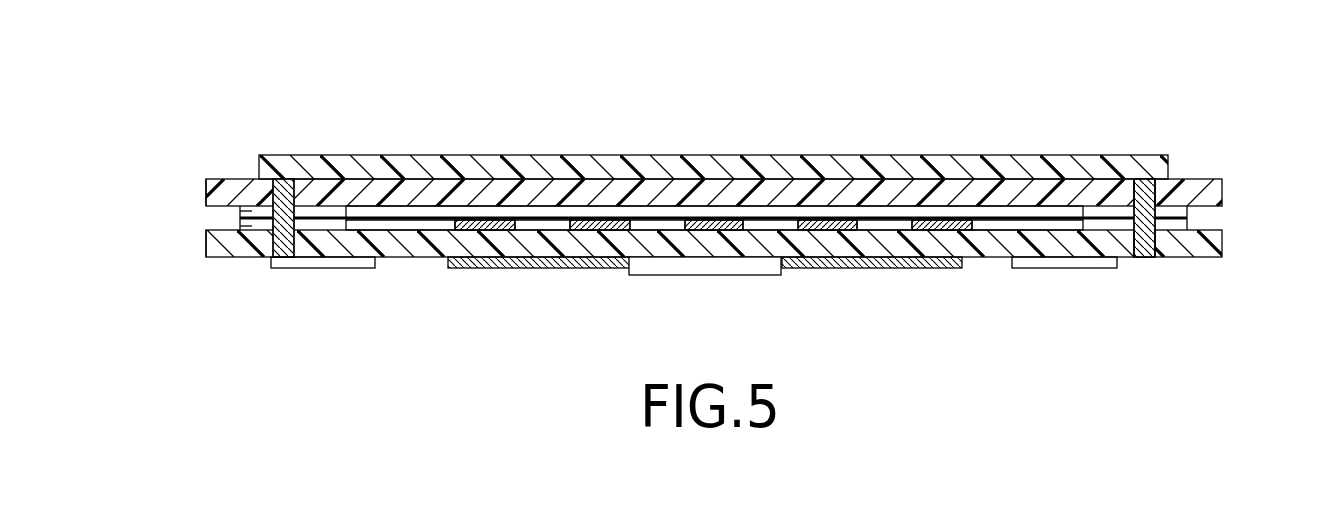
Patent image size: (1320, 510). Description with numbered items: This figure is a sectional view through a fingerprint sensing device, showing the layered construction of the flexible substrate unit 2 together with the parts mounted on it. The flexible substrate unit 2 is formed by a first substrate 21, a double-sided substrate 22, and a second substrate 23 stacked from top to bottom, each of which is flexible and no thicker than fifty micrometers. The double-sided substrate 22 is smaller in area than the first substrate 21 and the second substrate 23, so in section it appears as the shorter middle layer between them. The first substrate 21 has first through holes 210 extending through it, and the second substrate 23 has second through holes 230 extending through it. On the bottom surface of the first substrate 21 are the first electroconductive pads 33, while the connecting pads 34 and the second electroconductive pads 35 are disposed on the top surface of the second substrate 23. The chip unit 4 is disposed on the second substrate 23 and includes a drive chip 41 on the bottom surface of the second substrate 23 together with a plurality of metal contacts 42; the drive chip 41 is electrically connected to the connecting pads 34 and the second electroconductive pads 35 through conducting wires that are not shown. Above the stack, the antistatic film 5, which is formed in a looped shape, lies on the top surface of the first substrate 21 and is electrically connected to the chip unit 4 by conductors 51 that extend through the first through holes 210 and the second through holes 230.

The flexible substrate unit 2 is at (176, 188).
The first substrate 21 is at (1207, 193).
The double-sided substrate 22 is at (1012, 216).
The second substrate 23 is at (1220, 257).
The first through holes 210 is at (1175, 182).
The second through holes 230 is at (1180, 253).
The first electroconductive pads 33 is at (240, 211).
The connecting pads 34 is at (250, 226).
The second electroconductive pads 35 is at (594, 222).
The chip unit 4 is at (602, 298).
The drive chip 41 is at (754, 264).
The metal contacts 42 is at (1023, 262).
The antistatic film 5 is at (835, 166).
The conductors 51 is at (282, 188).